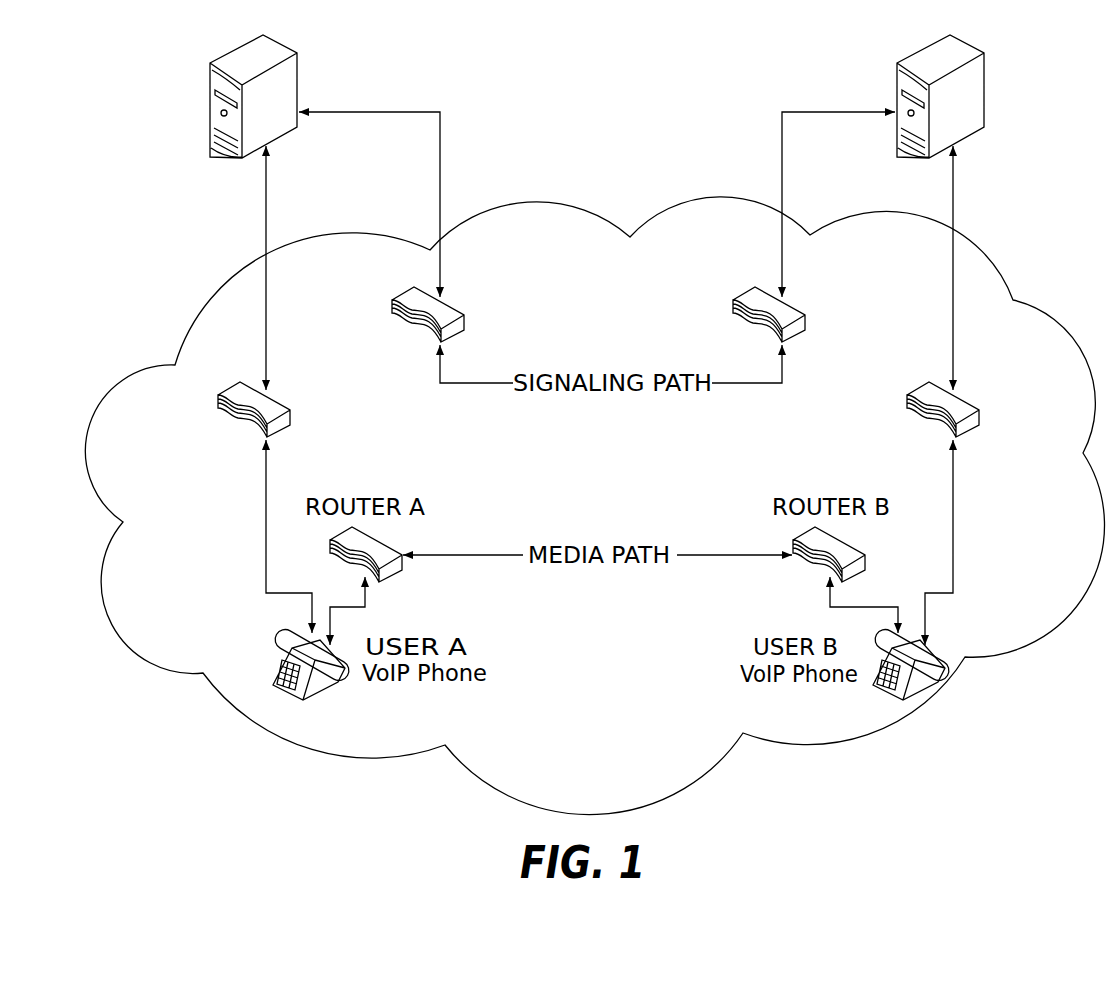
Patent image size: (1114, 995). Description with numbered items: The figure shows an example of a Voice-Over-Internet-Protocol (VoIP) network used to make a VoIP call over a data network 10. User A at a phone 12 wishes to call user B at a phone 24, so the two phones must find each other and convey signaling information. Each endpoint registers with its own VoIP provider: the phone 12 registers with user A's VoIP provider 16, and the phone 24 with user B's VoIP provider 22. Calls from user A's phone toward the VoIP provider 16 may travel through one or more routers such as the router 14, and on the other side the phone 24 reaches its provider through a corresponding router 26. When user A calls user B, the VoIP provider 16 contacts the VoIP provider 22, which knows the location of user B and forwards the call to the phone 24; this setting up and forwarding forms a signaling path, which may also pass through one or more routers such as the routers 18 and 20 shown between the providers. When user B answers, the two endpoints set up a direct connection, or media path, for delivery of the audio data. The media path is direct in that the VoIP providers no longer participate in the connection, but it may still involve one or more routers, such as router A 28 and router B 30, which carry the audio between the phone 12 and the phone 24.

The data network 10 is at (673, 208).
The phone 12 is at (318, 692).
The router 14 is at (270, 406).
The VoIP provider 16 is at (271, 50).
The router 18 is at (452, 316).
The router 20 is at (752, 301).
The VoIP provider 22 is at (958, 50).
The phone 24 is at (883, 692).
The router 26 is at (926, 393).
The router 28 is at (372, 548).
The router 30 is at (835, 548).